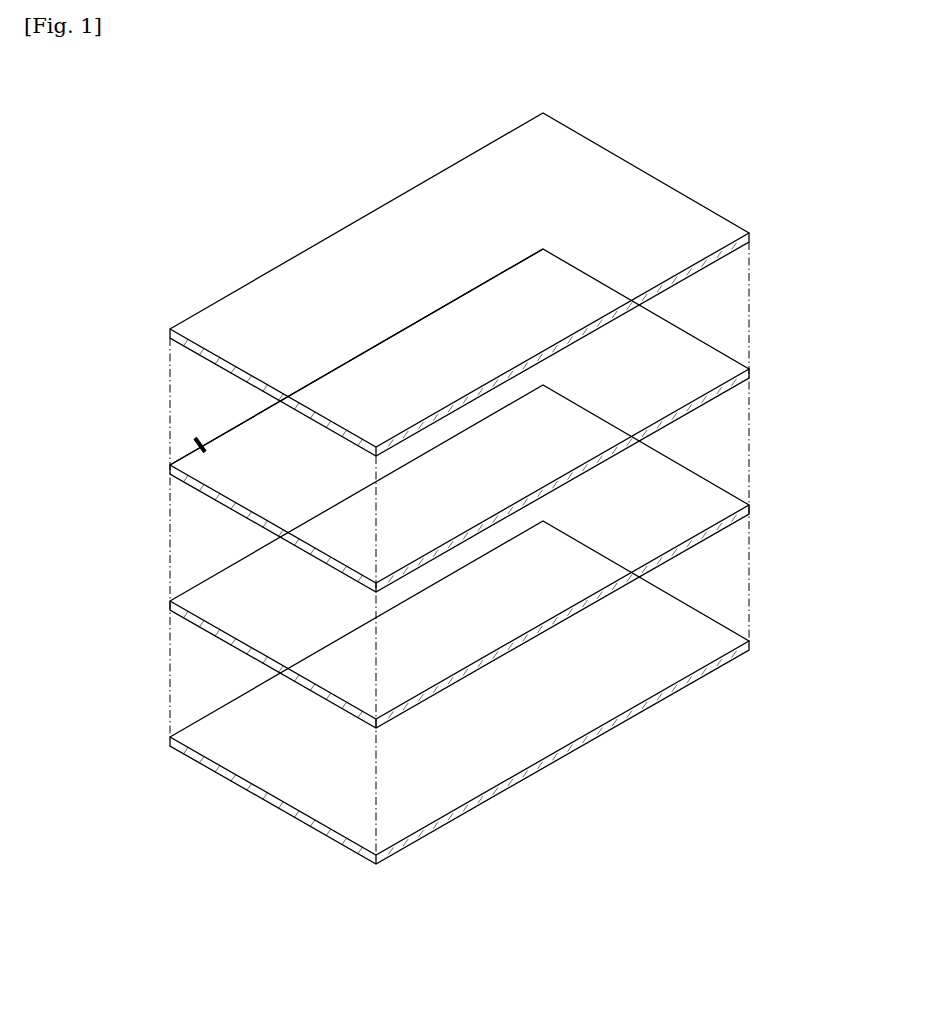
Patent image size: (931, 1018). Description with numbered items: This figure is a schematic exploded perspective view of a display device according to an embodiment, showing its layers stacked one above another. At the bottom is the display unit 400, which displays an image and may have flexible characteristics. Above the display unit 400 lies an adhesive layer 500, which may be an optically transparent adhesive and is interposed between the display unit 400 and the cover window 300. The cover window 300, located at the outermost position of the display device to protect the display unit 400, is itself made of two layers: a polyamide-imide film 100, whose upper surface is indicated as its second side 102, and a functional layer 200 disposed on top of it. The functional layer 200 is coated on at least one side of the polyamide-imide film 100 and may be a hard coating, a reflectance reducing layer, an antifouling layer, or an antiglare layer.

The polyamide-imide film 100 is at (489, 420).
The second side 102 is at (200, 446).
The functional layer 200 is at (751, 236).
The cover window 300 is at (520, 352).
The display unit 400 is at (751, 644).
The adhesive layer 500 is at (751, 508).